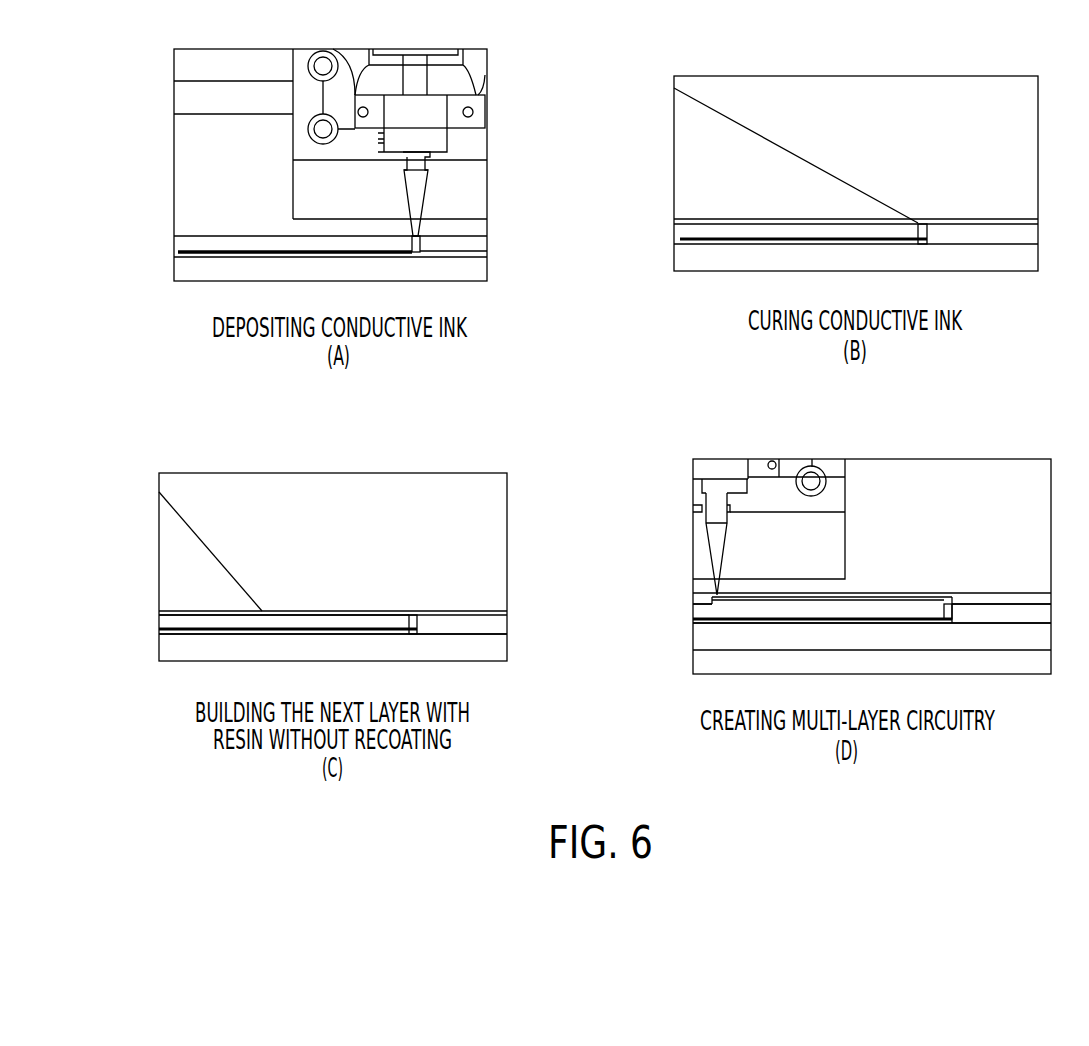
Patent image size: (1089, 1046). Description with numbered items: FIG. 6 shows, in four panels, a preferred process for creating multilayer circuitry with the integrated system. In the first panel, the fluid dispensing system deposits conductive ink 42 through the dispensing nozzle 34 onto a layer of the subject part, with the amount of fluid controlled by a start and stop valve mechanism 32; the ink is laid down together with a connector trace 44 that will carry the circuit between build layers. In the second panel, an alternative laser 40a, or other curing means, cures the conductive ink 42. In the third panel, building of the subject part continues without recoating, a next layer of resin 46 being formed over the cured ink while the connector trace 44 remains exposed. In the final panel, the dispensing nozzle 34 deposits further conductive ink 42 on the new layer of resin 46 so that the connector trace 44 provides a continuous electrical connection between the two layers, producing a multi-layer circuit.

The start and stop valve mechanism 32 is at (738, 495).
The dispensing nozzle 34 is at (416, 181).
The alternative laser 40a is at (833, 175).
The conductive ink 42 is at (177, 252).
The connector trace 44 is at (420, 246).
The resin 46 is at (160, 622).